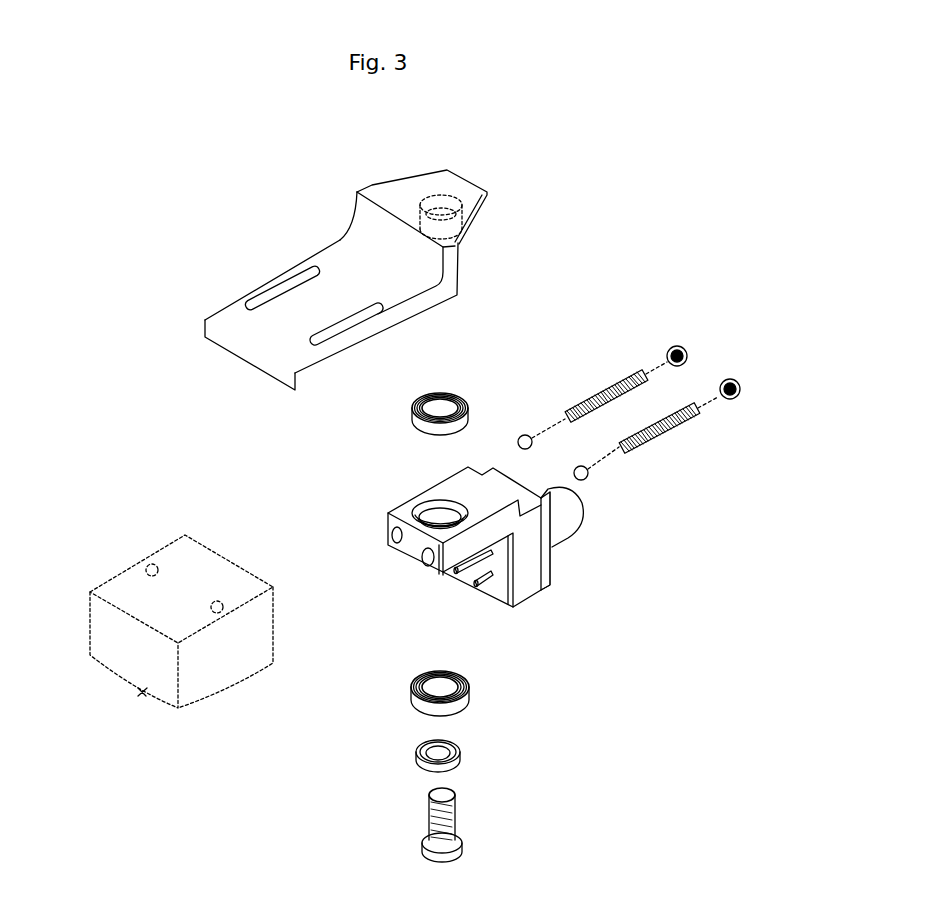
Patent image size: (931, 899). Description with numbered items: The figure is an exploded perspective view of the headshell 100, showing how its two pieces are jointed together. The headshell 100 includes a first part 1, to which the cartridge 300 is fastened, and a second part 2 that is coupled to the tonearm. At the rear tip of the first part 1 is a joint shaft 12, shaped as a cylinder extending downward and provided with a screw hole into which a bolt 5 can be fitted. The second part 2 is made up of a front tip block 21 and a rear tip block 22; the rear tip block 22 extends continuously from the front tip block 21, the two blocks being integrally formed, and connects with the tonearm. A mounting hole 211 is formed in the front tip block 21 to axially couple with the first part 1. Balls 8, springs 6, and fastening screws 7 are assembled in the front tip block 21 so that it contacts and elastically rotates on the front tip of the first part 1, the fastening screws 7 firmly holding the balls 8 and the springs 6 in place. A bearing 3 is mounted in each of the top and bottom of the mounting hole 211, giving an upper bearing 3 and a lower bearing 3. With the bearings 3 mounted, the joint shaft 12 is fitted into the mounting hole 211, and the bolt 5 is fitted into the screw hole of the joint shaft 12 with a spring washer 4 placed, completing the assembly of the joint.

The headshell 100 is at (108, 178).
The first part 1 is at (288, 246).
The joint shaft 12 is at (478, 222).
The second part 2 is at (473, 578).
The front tip block 21 is at (420, 550).
The mounting hole 211 is at (413, 513).
The rear tip block 22 is at (553, 548).
The bearing 3 is at (455, 396).
The spring washer 4 is at (461, 742).
The bolt 5 is at (463, 832).
The spring 6 is at (680, 440).
The fastening screw 7 is at (740, 396).
The ball 8 is at (590, 480).
The cartridge 300 is at (127, 587).